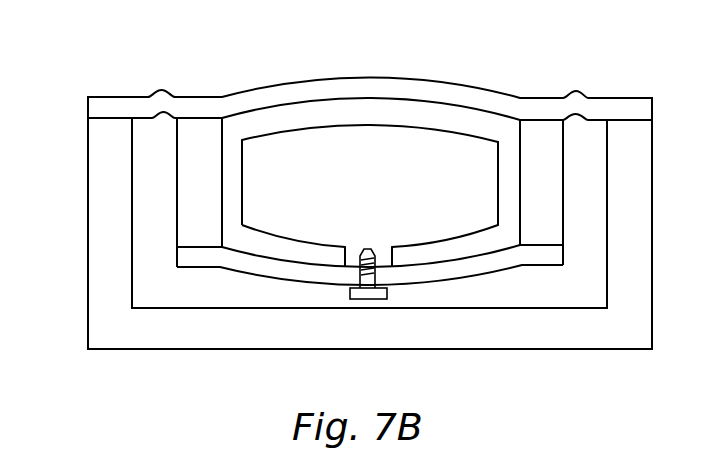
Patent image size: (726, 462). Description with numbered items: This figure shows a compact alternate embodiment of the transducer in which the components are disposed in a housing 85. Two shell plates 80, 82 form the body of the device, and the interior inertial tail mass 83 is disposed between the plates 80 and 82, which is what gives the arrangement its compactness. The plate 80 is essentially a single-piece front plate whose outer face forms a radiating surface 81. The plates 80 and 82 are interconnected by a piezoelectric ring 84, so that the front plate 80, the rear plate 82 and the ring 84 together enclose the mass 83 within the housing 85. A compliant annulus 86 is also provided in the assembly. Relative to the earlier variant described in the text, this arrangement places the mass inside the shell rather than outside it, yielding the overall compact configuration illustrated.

The shell plate 80 is at (361, 82).
The radiating surface 81 is at (436, 70).
The shell plate 82 is at (482, 272).
The inertial tail mass 83 is at (385, 203).
The piezoelectric ring 84 is at (180, 185).
The housing 85 is at (268, 357).
The compliant annulus 86 is at (163, 84).